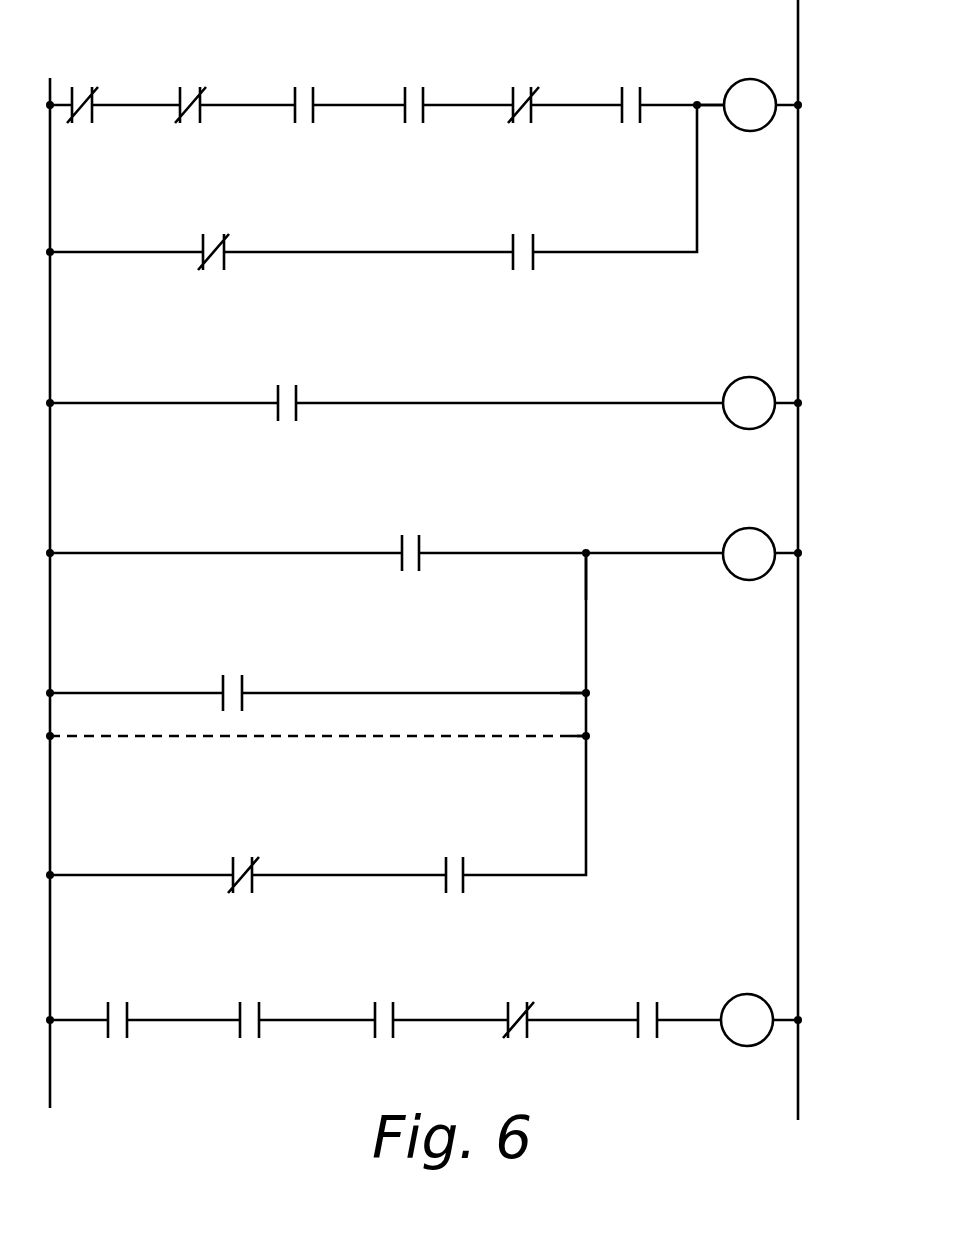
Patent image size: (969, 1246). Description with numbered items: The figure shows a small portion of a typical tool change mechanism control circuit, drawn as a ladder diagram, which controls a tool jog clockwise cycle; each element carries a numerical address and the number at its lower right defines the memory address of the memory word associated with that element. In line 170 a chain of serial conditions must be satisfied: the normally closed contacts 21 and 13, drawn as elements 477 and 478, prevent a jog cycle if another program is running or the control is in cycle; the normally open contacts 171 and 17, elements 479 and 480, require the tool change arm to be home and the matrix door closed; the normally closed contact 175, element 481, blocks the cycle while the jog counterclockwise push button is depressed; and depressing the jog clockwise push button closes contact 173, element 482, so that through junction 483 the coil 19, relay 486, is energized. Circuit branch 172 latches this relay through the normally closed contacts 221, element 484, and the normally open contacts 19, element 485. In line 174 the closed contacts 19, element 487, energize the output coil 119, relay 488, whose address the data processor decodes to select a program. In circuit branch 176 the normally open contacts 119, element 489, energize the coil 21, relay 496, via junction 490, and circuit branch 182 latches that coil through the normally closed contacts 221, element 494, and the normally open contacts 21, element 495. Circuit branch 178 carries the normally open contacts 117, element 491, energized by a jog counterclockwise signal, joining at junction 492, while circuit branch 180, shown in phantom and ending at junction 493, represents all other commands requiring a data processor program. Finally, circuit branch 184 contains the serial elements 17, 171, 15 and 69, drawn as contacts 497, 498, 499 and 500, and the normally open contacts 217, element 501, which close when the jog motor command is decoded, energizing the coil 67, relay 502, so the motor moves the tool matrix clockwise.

The line 170 is at (50, 105).
The circuit branch 172 is at (50, 252).
The line 174 is at (50, 403).
The circuit branch 176 is at (50, 553).
The circuit branch 178 is at (50, 693).
The circuit branch 180 is at (50, 736).
The circuit branch 182 is at (50, 875).
The circuit branch 184 is at (50, 1020).
The program run normally closed contact 477 is at (89, 75).
The control in cycle normally closed contact 478 is at (198, 75).
The tool change arm home contact 479 is at (308, 75).
The tool door closed contact 480 is at (415, 75).
The jog CCW pushbutton normally closed contact 481 is at (530, 75).
The jog CW pushbutton contact 482 is at (641, 75).
The junction 483 is at (718, 122).
The program finished normally closed contact 484 is at (219, 223).
The jog CW DP command contact 485 is at (531, 223).
The jog CW DP command control relay 486 is at (805, 110).
The jog command contact 487 is at (300, 375).
The select jog CW program control relay 488 is at (808, 410).
The select jog CW program contact 489 is at (409, 522).
The junction 490 is at (608, 576).
The select jog CCW program contact 491 is at (230, 662).
The junction 492 is at (596, 694).
The junction 493 is at (601, 737).
The program finished normally closed contact 494 is at (249, 845).
The program run contact 495 is at (460, 845).
The program run control relay 496 is at (807, 562).
The tool door closed contact 497 is at (119, 990).
The tool change arm home contact 498 is at (253, 990).
The tool in position contact 499 is at (390, 990).
The move tool matrix CCW normally closed contact 500 is at (518, 990).
The jog CW matrix command contact 501 is at (647, 990).
The move tool matrix CW control relay 502 is at (812, 1028).
The coil 21 is at (420, 450).
The normally closed contacts 13 is at (197, 65).
The normally open contacts 171 is at (284, 522).
The normally open contacts 17 is at (269, 522).
The normally closed contact 175 is at (529, 65).
The contact 173 is at (638, 65).
The coil 19 is at (522, 215).
The normally closed contacts 221 is at (234, 523).
The output coil 119 is at (586, 436).
The normally open contacts 117 is at (236, 653).
The serial element 15 is at (387, 979).
The serial element 69 is at (519, 979).
The normally open contacts 217 is at (651, 979).
The coil 67 is at (753, 979).